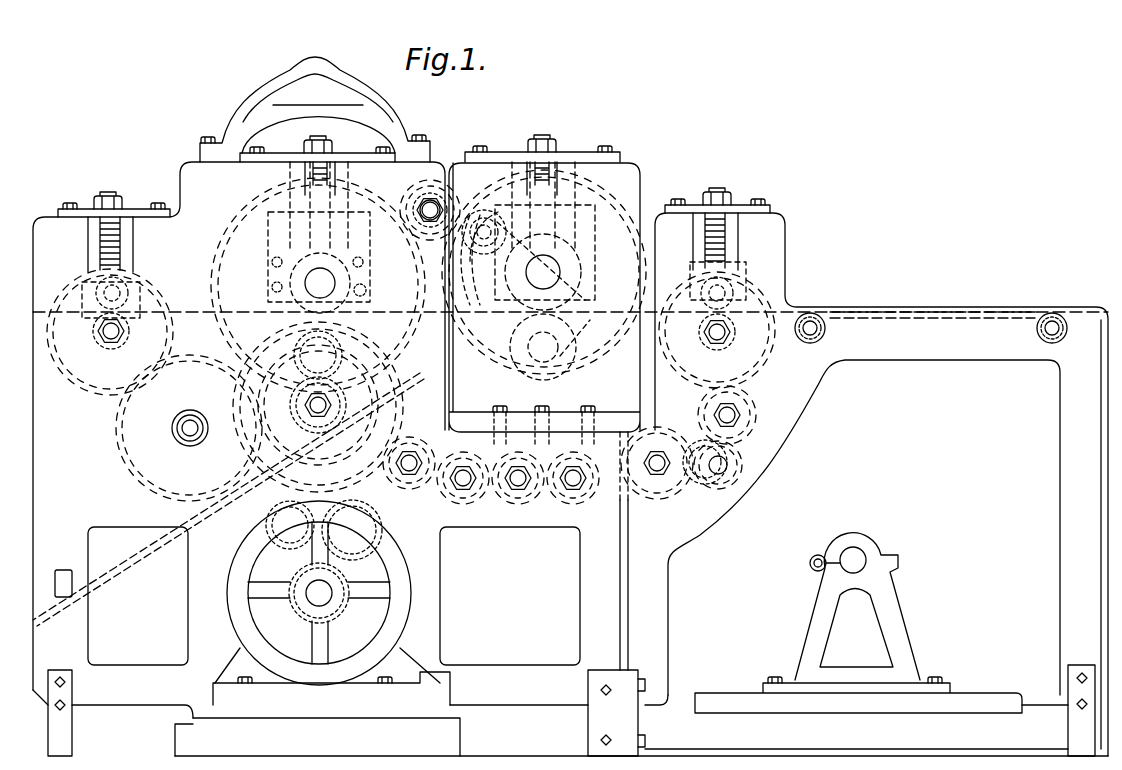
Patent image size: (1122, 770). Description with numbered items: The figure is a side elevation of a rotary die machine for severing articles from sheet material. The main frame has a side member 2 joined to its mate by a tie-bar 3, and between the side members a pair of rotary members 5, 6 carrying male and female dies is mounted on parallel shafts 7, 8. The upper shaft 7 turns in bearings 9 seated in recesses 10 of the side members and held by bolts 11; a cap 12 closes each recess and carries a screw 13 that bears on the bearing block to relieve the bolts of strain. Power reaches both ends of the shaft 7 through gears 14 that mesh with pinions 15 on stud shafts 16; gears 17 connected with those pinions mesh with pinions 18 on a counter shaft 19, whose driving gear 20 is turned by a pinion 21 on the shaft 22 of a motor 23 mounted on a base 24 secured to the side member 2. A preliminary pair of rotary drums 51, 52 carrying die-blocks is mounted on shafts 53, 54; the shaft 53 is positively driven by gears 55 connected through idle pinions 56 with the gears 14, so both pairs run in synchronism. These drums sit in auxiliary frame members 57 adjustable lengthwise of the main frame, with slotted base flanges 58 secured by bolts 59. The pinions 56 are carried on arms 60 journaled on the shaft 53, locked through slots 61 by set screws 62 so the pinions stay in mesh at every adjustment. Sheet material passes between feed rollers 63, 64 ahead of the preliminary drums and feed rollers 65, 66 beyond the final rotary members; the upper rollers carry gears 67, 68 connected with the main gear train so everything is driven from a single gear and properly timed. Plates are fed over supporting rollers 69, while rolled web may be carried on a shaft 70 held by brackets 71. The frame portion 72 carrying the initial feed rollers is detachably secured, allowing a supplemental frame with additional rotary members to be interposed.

The side member 2 is at (33, 415).
The tie-bar 3 is at (236, 135).
The rotary member 5 is at (366, 290).
The rotary member 6 is at (360, 336).
The upper shaft 7 is at (336, 278).
The shaft 8 is at (292, 345).
The bearing 9 is at (270, 258).
The recess 10 is at (270, 184).
The bolt 11 is at (270, 284).
The cap 12 is at (282, 153).
The screw 13 is at (333, 165).
The gear 14 is at (405, 212).
The pinion 15 is at (340, 398).
The stud shaft 16 is at (310, 420).
The gear 17 is at (414, 380).
The pinion 18 is at (268, 510).
The counter shaft 19 is at (278, 540).
The driving gear 20 is at (370, 516).
The pinion 21 is at (352, 600).
The motor shaft 22 is at (326, 604).
The motor 23 is at (410, 572).
The base 24 is at (388, 756).
The rotary drum 51 is at (586, 290).
The rotary drum 52 is at (598, 360).
The shaft 53 is at (578, 270).
The shaft 54 is at (560, 344).
The gear 55 is at (615, 202).
The idle pinion 56 is at (436, 184).
The auxiliary frame member 57 is at (628, 172).
The base flange 58 is at (540, 410).
The bolt 59 is at (504, 406).
The arm 60 is at (484, 210).
The slot 61 is at (475, 275).
The set screw 62 is at (488, 215).
The feed roller 63 is at (736, 334).
The feed roller 64 is at (740, 284).
The feed roller 65 is at (108, 344).
The feed roller 66 is at (88, 286).
The gear 67 is at (762, 378).
The gear 68 is at (128, 390).
The supporting roller 69 is at (1036, 328).
The shaft 70 is at (850, 568).
The bracket 71 is at (790, 658).
The detachable frame portion 72 is at (644, 672).